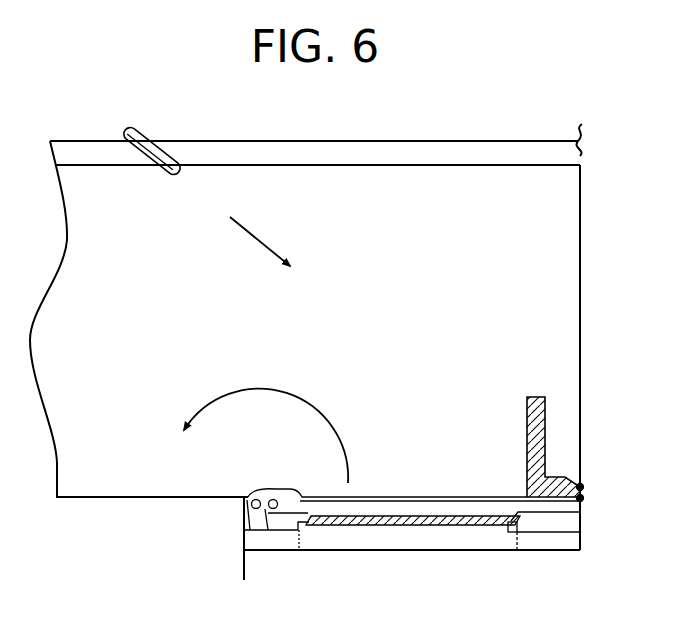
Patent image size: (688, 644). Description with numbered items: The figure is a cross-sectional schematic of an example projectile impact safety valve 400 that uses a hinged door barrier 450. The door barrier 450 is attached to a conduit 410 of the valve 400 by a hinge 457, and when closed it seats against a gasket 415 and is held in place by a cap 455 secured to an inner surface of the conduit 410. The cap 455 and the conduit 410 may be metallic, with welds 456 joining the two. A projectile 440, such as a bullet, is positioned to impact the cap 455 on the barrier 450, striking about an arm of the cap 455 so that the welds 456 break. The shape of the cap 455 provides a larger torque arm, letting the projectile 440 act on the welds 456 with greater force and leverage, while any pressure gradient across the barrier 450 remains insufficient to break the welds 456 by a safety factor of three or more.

The projectile impact safety valve 400 is at (387, 347).
The conduit 410 is at (580, 281).
The gasket 415 is at (384, 526).
The projectile 440 is at (158, 168).
The hinged door barrier 450 is at (418, 505).
The cap 455 is at (533, 438).
The welds 456 is at (584, 498).
The hinge 457 is at (245, 500).